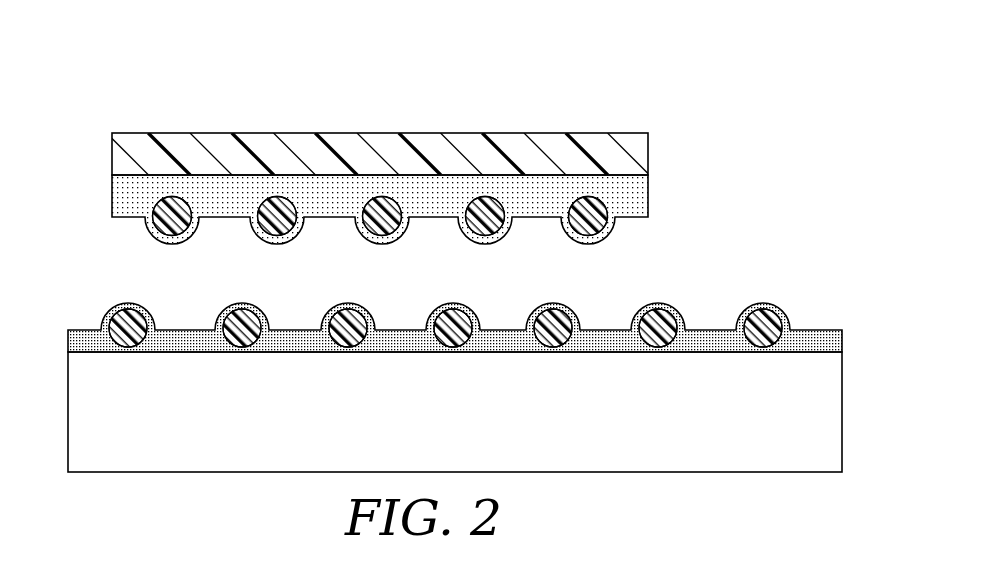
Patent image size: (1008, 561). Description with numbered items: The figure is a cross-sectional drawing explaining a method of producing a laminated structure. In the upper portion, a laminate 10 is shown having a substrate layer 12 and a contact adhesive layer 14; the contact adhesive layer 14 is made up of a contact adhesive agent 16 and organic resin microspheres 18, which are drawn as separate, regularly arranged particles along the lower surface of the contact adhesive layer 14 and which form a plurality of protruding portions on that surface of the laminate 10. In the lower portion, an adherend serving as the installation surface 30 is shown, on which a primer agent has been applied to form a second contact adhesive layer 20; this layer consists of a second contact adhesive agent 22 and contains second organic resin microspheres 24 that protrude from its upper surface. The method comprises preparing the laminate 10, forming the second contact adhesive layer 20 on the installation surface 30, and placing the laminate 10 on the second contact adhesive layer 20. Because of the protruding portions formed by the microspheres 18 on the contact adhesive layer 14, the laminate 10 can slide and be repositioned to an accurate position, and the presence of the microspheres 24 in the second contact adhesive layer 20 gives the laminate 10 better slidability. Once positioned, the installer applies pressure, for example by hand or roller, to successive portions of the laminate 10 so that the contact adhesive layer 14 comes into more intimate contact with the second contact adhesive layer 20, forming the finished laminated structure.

The laminate 10 is at (388, 147).
The substrate layer 12 is at (613, 152).
The contact adhesive layer 14 is at (388, 155).
The contact adhesive agent 16 is at (615, 202).
The microsphere 18 is at (487, 207).
The second contact adhesive layer 20 is at (464, 298).
The second contact adhesive agent 22 is at (830, 342).
The second organic resin microsphere 24 is at (773, 320).
The adherend 30 is at (830, 412).